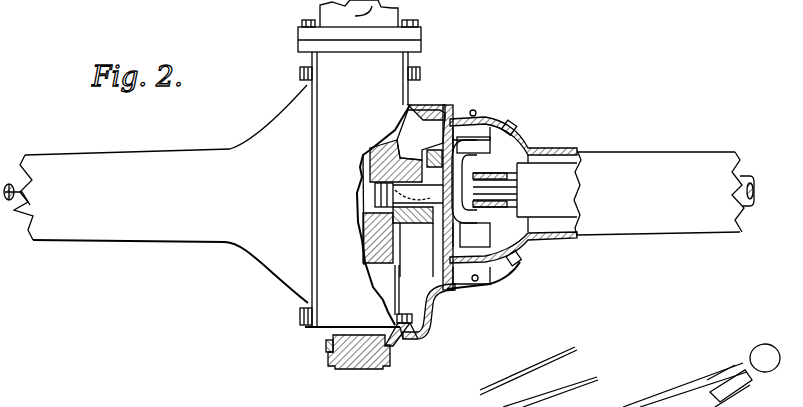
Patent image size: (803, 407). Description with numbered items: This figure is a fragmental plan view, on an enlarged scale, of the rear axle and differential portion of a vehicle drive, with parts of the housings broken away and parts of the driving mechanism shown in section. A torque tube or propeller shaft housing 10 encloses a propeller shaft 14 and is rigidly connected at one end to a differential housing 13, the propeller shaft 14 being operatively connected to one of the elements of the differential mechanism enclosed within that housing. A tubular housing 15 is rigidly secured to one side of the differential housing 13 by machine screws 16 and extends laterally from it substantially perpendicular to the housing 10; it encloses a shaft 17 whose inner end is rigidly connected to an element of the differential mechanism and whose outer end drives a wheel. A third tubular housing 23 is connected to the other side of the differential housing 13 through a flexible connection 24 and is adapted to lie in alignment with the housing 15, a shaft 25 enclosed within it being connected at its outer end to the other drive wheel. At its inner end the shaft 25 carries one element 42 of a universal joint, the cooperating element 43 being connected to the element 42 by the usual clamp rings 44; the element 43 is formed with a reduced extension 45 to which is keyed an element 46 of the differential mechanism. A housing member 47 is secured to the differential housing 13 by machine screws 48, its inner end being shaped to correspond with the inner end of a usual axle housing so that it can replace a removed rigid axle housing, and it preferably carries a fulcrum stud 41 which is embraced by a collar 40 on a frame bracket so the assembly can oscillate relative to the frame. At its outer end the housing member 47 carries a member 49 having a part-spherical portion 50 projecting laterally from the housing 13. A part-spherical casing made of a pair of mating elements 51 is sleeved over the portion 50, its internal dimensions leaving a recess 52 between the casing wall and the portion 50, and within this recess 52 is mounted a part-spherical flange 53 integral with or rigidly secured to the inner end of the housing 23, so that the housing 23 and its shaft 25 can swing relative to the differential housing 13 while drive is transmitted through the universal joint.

The torque tube or propeller shaft housing 10 is at (322, 16).
The differential housing 13 is at (335, 308).
The propeller shaft 14 is at (398, 15).
The tubular housing 15 is at (103, 228).
The machine screws 16 is at (300, 316).
The shaft 17 is at (14, 190).
The third tubular housing 23 is at (672, 222).
The flexible connection 24 is at (519, 110).
The shaft 25 is at (577, 157).
The collar 40 is at (328, 361).
The fulcrum stud 41 is at (366, 355).
The element of a universal joint 42 is at (495, 266).
The cooperating element of the universal joint 43 is at (448, 226).
The clamp rings 44 is at (453, 102).
The reduced extension 45 is at (416, 232).
The element of the differential mechanism 46 is at (414, 158).
The housing member 47 is at (412, 110).
The machine screws 48 is at (418, 73).
The member 49 is at (457, 284).
The part-spherical portion 50 is at (490, 280).
The mating elements 51 is at (476, 111).
The recess 52 is at (452, 140).
The part-spherical flange 53 is at (528, 152).